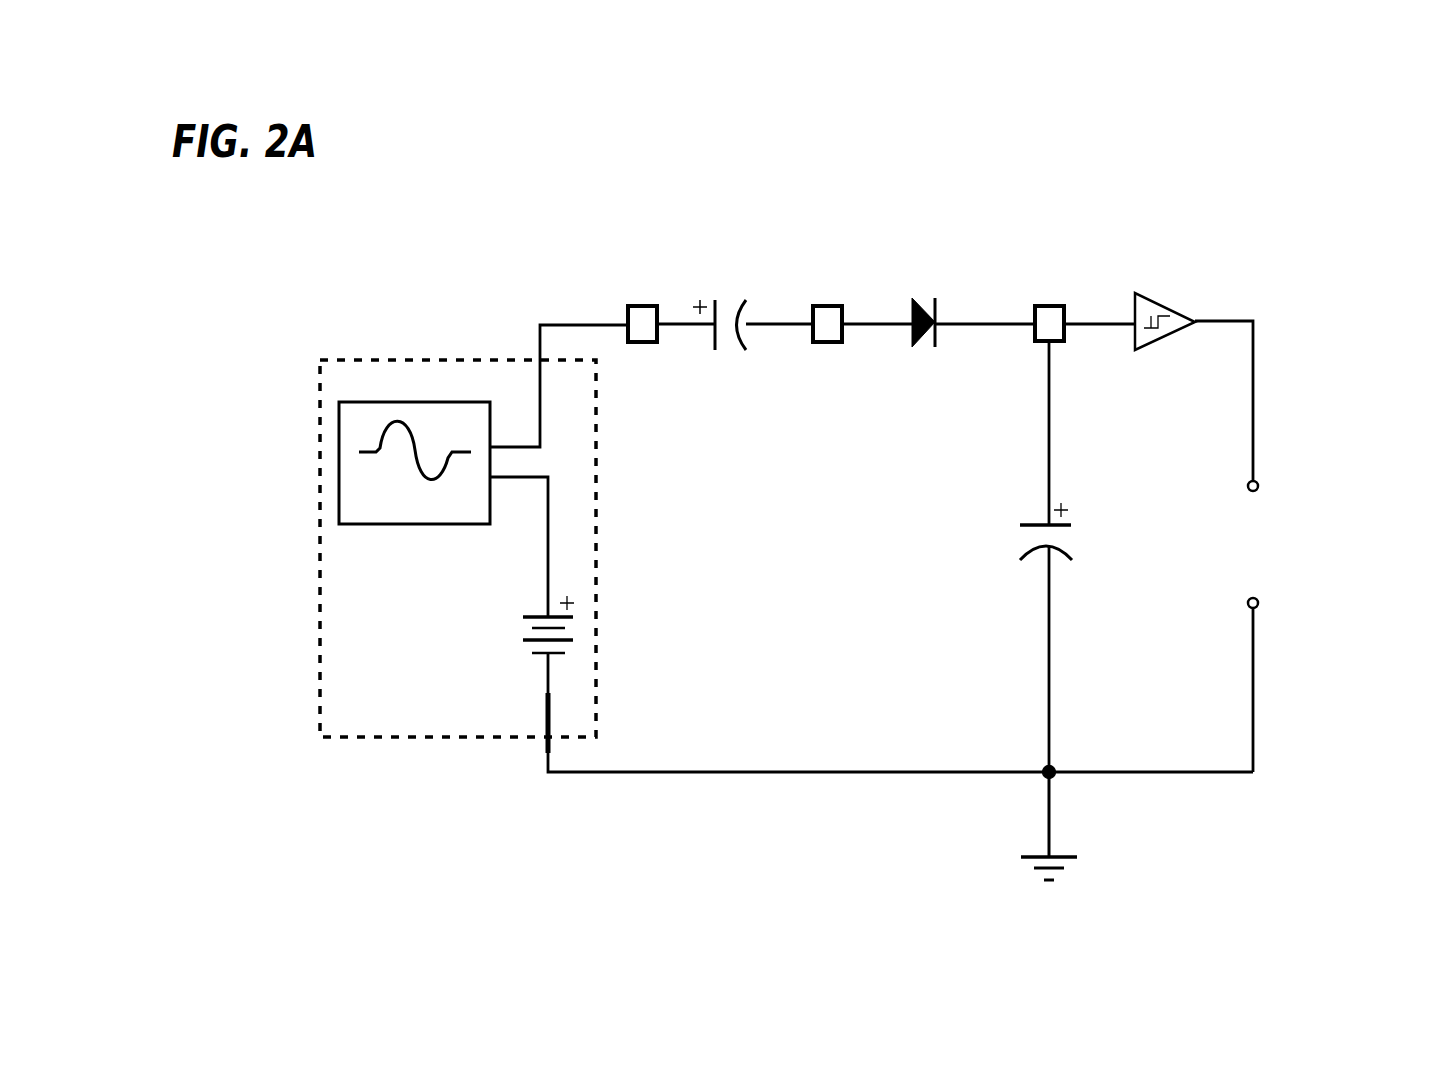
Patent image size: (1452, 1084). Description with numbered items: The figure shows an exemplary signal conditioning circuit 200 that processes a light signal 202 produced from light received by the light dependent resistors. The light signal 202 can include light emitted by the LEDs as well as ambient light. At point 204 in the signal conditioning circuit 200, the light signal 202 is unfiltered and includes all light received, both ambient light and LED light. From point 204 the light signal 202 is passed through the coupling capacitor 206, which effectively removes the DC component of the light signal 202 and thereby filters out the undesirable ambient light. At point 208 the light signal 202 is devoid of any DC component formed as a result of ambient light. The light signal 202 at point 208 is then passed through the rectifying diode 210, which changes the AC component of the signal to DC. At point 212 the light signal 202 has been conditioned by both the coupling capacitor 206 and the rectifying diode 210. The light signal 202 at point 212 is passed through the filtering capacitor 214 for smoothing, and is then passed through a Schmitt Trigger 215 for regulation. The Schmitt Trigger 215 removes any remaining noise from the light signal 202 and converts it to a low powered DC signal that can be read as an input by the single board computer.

The signal conditioning circuit 200 is at (360, 290).
The light signal 202 is at (320, 469).
The point 204 is at (647, 300).
The coupling capacitor 206 is at (727, 284).
The point 208 is at (828, 298).
The rectifying diode 210 is at (930, 283).
The point 212 is at (1050, 298).
The filtering capacitor 214 is at (1082, 487).
The Schmitt Trigger 215 is at (1166, 292).